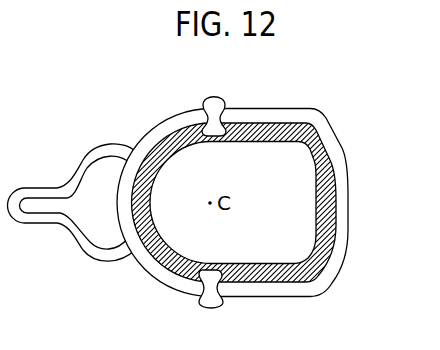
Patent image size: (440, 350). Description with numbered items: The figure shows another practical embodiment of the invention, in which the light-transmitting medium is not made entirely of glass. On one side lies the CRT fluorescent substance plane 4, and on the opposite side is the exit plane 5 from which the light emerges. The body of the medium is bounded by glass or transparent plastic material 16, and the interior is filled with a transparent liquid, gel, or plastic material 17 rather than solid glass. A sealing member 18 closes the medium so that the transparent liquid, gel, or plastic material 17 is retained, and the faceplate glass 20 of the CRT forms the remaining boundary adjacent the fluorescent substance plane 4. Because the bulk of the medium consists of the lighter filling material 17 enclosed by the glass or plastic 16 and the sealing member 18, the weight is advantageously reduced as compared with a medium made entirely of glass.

The CRT fluorescent substance plane 4 is at (115, 202).
The exit plane 5 is at (220, 201).
The glass or transparent plastic material 16 is at (293, 113).
The transparent liquid, gel, or plastic material 17 is at (256, 157).
The sealing member 18 is at (213, 99).
The faceplate glass 20 is at (160, 132).